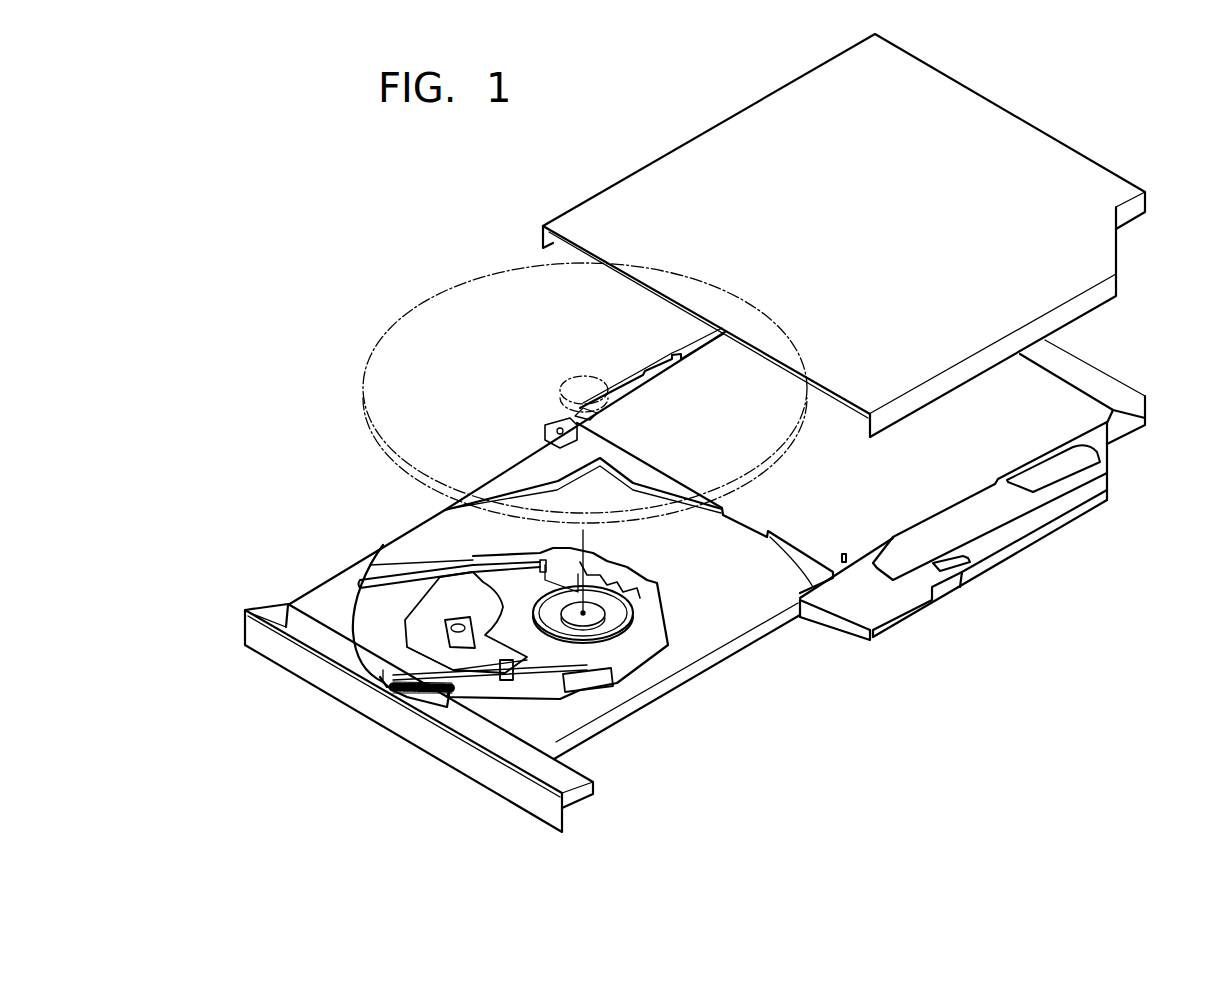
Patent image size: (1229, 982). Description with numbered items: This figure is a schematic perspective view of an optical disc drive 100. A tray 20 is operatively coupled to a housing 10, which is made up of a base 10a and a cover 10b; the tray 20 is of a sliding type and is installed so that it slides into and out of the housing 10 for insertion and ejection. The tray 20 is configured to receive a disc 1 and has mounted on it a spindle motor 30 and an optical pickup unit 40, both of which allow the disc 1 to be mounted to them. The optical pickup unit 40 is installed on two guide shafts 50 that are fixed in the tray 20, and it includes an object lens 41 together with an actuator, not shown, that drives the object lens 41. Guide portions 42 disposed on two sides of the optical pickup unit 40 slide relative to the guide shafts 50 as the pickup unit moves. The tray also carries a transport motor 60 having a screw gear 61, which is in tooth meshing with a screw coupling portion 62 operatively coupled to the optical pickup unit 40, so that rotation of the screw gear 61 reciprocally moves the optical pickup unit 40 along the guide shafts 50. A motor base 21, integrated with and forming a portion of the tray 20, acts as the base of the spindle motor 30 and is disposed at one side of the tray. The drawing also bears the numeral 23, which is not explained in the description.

The optical disc drive 100 is at (256, 312).
The disc 1 is at (388, 350).
The housing 10 is at (1182, 283).
The base 10a is at (1115, 382).
The cover 10b is at (1116, 290).
The tray 20 is at (580, 778).
The motor base 21 is at (638, 636).
The guide rails 23 is at (360, 585).
The spindle motor 30 is at (617, 617).
The optical pickup unit 40 is at (412, 627).
The object lens 41 is at (475, 627).
The guide portions 42 is at (470, 557).
The guide shafts 50 is at (362, 580).
The transport motor 60 is at (642, 670).
The screw gear 61 is at (420, 692).
The screw coupling portion 62 is at (493, 687).